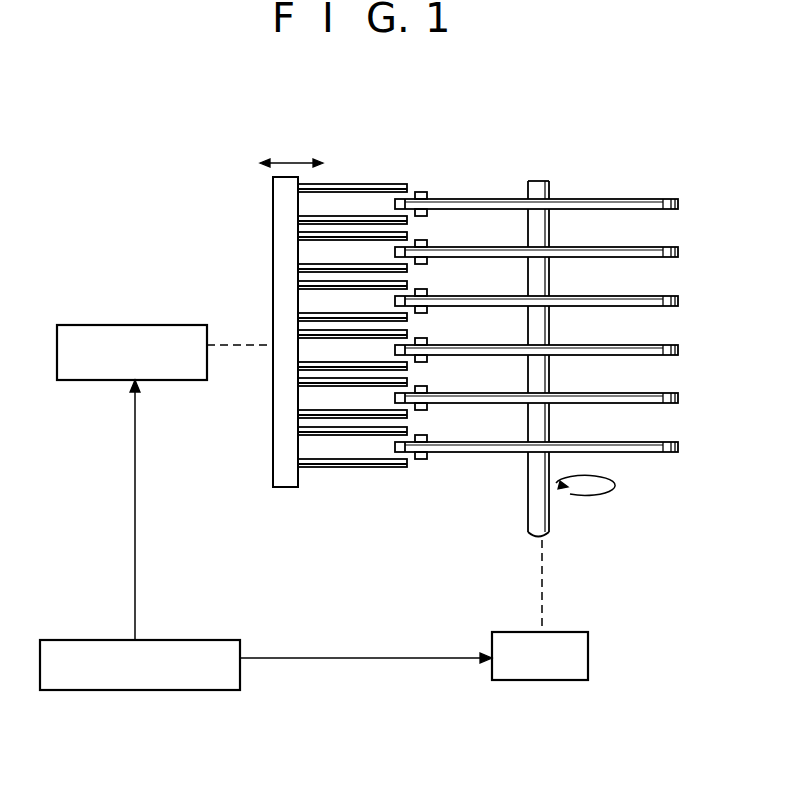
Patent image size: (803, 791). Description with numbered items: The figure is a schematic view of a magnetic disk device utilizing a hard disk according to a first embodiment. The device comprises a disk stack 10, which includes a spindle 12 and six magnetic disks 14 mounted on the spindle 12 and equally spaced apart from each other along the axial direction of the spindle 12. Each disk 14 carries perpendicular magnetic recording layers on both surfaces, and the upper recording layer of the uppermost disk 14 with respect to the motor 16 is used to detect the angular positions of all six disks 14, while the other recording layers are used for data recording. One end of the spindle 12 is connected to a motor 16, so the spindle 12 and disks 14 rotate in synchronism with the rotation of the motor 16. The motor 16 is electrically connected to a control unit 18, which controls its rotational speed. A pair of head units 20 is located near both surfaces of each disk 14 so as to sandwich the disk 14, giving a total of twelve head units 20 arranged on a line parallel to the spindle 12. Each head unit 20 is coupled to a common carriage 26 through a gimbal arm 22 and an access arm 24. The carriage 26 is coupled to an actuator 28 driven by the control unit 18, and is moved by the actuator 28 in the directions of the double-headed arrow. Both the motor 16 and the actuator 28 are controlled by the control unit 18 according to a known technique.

The disk stack 10 is at (597, 180).
The spindle 12 is at (540, 181).
The magnetic disks 14 is at (680, 202).
The motor 16 is at (590, 655).
The control unit 18 is at (189, 640).
The head units 20 is at (430, 191).
The gimbal arm 22 is at (418, 190).
The access arm 24 is at (376, 184).
The carriage 26 is at (273, 244).
The actuator 28 is at (128, 325).